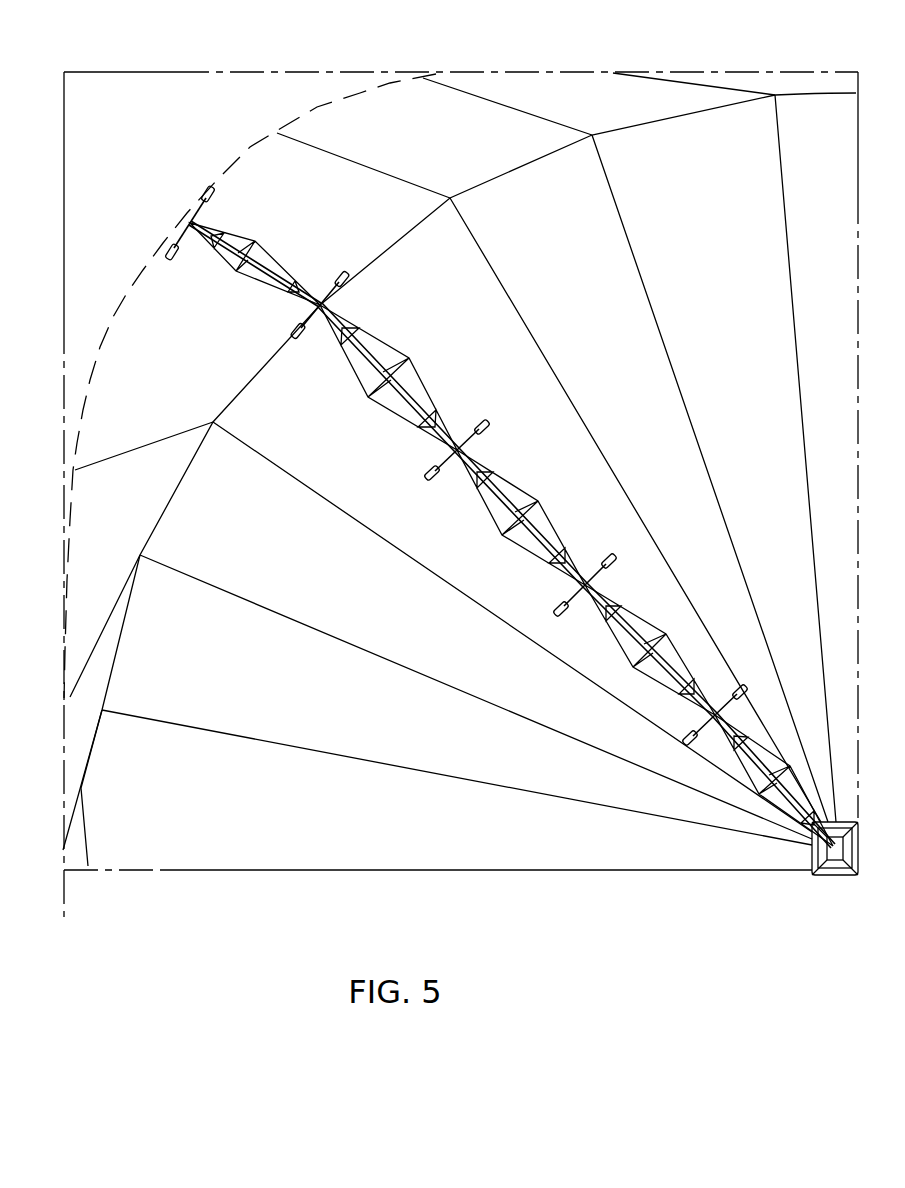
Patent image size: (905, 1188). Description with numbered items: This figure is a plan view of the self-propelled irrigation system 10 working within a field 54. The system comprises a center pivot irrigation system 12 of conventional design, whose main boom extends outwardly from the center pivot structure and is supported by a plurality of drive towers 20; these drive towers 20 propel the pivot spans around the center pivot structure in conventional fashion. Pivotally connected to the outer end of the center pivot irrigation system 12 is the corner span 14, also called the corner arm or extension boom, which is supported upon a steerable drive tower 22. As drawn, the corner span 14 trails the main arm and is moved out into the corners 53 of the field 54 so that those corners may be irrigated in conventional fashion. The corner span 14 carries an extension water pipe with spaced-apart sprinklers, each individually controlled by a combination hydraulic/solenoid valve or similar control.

The self-propelled irrigation system 10 is at (481, 554).
The center pivot irrigation system 12 is at (787, 230).
The corner span 14 is at (667, 83).
The drive towers 20 is at (415, 458).
The steerable drive tower 22 is at (194, 265).
The corners 53 is at (168, 115).
The field 54 is at (62, 132).